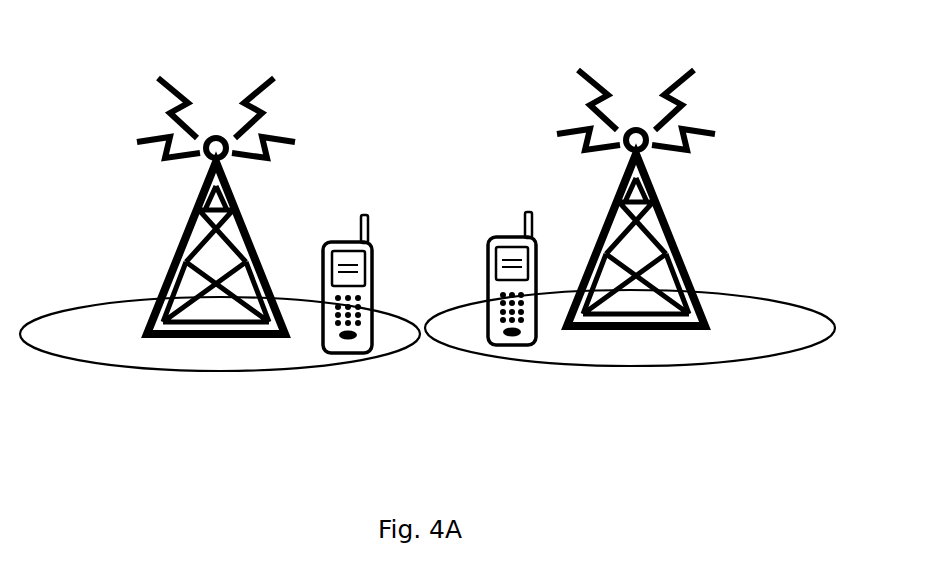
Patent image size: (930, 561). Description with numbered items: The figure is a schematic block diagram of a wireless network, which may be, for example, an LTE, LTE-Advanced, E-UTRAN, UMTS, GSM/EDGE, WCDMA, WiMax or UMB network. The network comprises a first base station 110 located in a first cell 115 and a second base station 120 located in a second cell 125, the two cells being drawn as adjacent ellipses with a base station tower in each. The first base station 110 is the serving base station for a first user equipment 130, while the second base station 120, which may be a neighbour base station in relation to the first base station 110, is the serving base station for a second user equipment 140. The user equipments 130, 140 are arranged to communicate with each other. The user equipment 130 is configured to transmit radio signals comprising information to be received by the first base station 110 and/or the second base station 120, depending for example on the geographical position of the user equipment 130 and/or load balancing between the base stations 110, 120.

The first base station 110 is at (187, 206).
The first cell 115 is at (170, 355).
The second base station 120 is at (677, 198).
The second cell 125 is at (693, 352).
The first user equipment 130 is at (347, 326).
The second user equipment 140 is at (512, 324).